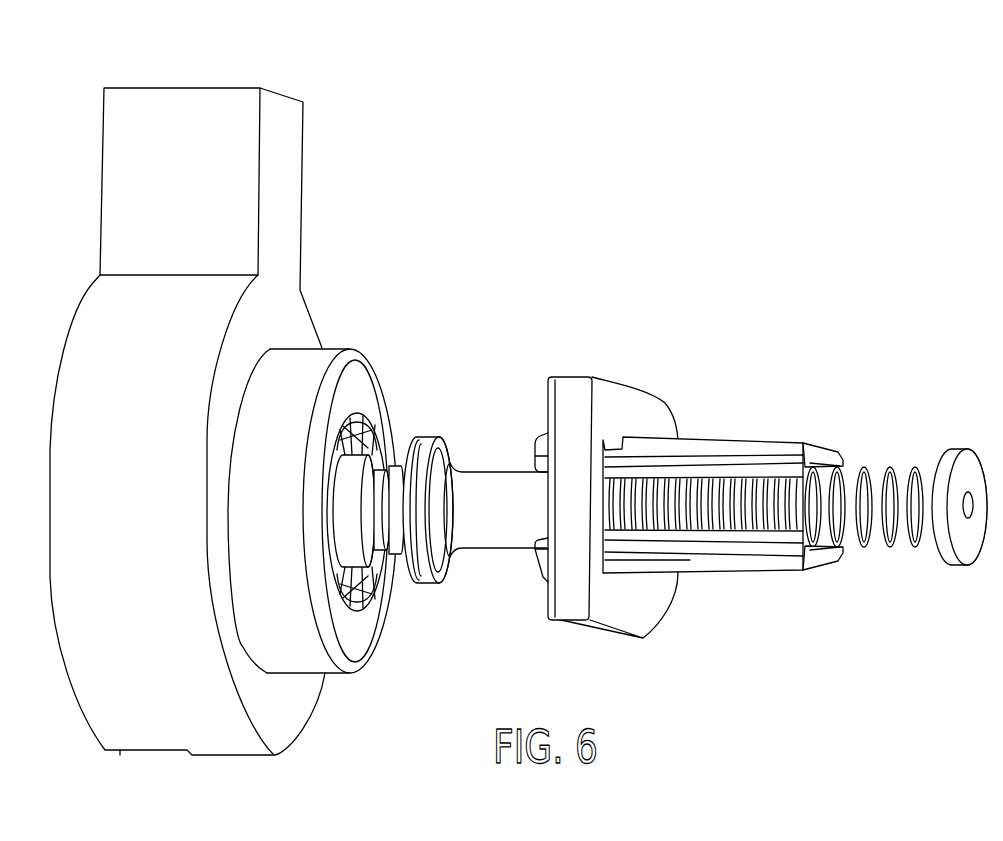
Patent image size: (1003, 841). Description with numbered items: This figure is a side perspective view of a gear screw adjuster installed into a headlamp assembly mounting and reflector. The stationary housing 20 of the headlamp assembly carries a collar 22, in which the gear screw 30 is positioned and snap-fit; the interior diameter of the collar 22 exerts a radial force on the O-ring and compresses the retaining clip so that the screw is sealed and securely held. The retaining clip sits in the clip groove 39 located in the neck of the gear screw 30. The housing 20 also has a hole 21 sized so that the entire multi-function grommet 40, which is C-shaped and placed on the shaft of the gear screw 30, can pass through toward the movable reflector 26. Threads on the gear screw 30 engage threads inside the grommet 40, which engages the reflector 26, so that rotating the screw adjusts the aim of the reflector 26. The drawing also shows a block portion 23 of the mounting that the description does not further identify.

The housing 20 is at (162, 735).
The hole 21 is at (382, 462).
The collar 22 is at (337, 676).
The housing block 23 is at (180, 87).
The movable reflector 26 is at (608, 380).
The gear screw 30 is at (948, 452).
The clip groove 39 is at (343, 457).
The multi-function grommet 40 is at (735, 443).